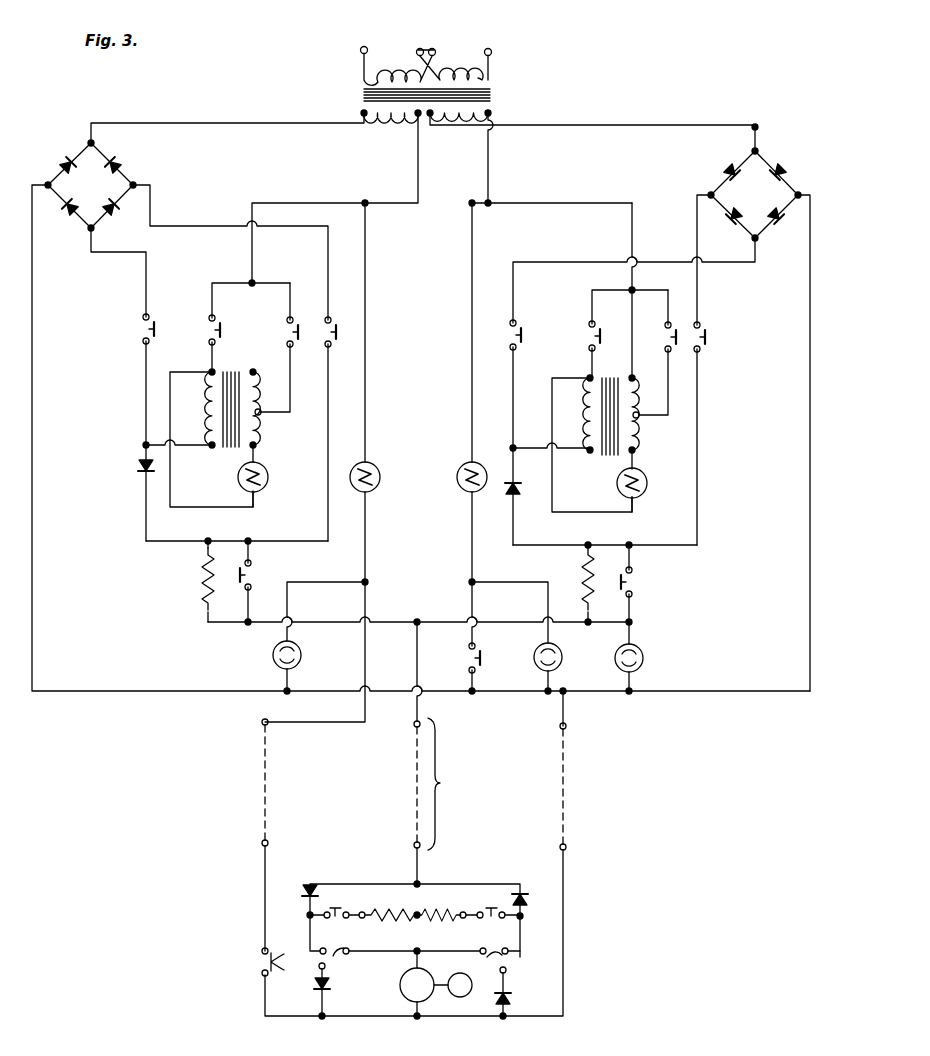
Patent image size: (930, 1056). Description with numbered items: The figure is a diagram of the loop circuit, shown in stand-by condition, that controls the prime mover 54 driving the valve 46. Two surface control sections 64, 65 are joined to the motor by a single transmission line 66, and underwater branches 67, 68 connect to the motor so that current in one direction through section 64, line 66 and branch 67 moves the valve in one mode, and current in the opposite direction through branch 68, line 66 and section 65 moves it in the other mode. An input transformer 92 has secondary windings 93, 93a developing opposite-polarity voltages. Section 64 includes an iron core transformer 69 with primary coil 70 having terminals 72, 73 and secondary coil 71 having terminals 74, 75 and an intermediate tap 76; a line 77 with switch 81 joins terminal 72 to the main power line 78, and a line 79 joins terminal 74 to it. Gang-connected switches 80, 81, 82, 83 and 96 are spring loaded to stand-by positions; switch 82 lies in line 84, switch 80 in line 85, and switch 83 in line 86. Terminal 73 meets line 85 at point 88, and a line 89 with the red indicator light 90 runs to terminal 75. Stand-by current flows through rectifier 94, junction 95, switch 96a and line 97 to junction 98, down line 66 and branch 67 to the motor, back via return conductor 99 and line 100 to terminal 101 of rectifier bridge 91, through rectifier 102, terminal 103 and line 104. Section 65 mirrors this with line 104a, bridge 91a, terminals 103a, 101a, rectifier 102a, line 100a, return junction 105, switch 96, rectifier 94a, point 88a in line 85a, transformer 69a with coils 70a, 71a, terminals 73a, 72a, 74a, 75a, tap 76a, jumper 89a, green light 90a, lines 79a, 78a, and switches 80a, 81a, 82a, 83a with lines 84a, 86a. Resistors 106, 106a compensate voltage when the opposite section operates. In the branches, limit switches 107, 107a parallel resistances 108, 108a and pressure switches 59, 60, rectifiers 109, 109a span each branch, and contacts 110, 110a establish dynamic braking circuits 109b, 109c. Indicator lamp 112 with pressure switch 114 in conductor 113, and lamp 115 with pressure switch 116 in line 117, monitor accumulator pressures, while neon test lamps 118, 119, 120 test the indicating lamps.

The input transformer 92 is at (497, 85).
The secondary winding 93 is at (390, 122).
The secondary winding 93a is at (462, 122).
The line 104 is at (180, 122).
The line 104a is at (562, 123).
The main power line 78 is at (418, 176).
The power line 78a is at (634, 233).
The rectifier bridge 91 is at (98, 175).
The rectifier bridge 91a is at (734, 182).
The bridge terminal 101 is at (48, 182).
The bridge terminal 101a is at (830, 180).
The rectifier 102 is at (78, 150).
The rectifier 102a is at (772, 165).
The bridge terminal 103 is at (96, 143).
The bridge terminal 103a is at (752, 151).
The line 100 is at (530, 698).
The line 100a is at (810, 310).
The control switch 80 is at (157, 322).
The control switch 81 is at (219, 322).
The control switch 82 is at (284, 322).
The control switch 83 is at (324, 322).
The control switch 80a is at (522, 325).
The control switch 81a is at (625, 308).
The control switch 82a is at (662, 346).
The control switch 83a is at (705, 343).
The line 84 is at (290, 382).
The line 84a is at (670, 368).
The line 85 is at (146, 379).
The line 85a is at (514, 380).
The line 86 is at (328, 382).
The line 86a is at (698, 416).
The line 77 is at (212, 366).
The line 79 is at (253, 346).
The line 79a is at (634, 318).
The iron core transformer 69 is at (232, 428).
The iron core transformer 69a is at (615, 422).
The primary coil 70 is at (206, 427).
The primary coil 70a is at (584, 431).
The secondary coil 71 is at (255, 433).
The secondary coil 71a is at (636, 434).
The end terminal 72 is at (205, 376).
The end terminal 72a is at (590, 370).
The end terminal 73 is at (207, 450).
The end terminal 73a is at (590, 455).
The end terminal 74 is at (255, 370).
The end terminal 74a is at (634, 376).
The end terminal 75 is at (257, 449).
The end terminal 75a is at (635, 452).
The intermediate tap 76 is at (261, 409).
The intermediate tap 76a is at (638, 411).
The point 88 is at (143, 445).
The point 88a is at (512, 446).
The line 89 is at (216, 510).
The jumper 89a is at (600, 514).
The red indicator light 90 is at (268, 486).
The green indicator light 90a is at (645, 487).
The rectifier 94 is at (137, 472).
The rectifier 94a is at (518, 490).
The junction 95 is at (252, 546).
The control switch 96 is at (625, 590).
The switch 96a is at (289, 602).
The line 97 is at (348, 623).
The junction 98 is at (424, 608).
The resistor 106 is at (202, 608).
The resistor 106a is at (582, 580).
The indicator lamp 112 is at (377, 466).
The conductor 113 is at (366, 556).
The indicator lamp 115 is at (458, 488).
The pressure switch 116 is at (482, 660).
The line 117 is at (472, 392).
The neon test lamp 118 is at (272, 657).
The neon test lamp 119 is at (560, 652).
The neon test lamp 120 is at (644, 668).
The return junction 105 is at (568, 706).
The control section 64 is at (138, 615).
The control section 65 is at (697, 625).
The transmission line 66 is at (441, 781).
The branch 67 is at (332, 858).
The branch 68 is at (483, 868).
The return conductor 99 is at (566, 950).
The pressure switch 114 is at (262, 964).
The rectifier 109 is at (302, 892).
The rectifier 109a is at (530, 898).
The dynamic braking circuit 109b is at (312, 989).
The dynamic braking circuit 109c is at (508, 997).
The pressure switch 59 is at (332, 922).
The pressure switch 60 is at (495, 923).
The limit switch 107 is at (340, 947).
The limit switch 107a is at (486, 948).
The resistance 108 is at (400, 910).
The resistance 108a is at (432, 910).
The contact 110 is at (327, 966).
The contact 110a is at (508, 972).
The prime mover 54 is at (402, 996).
The valve 46 is at (462, 998).